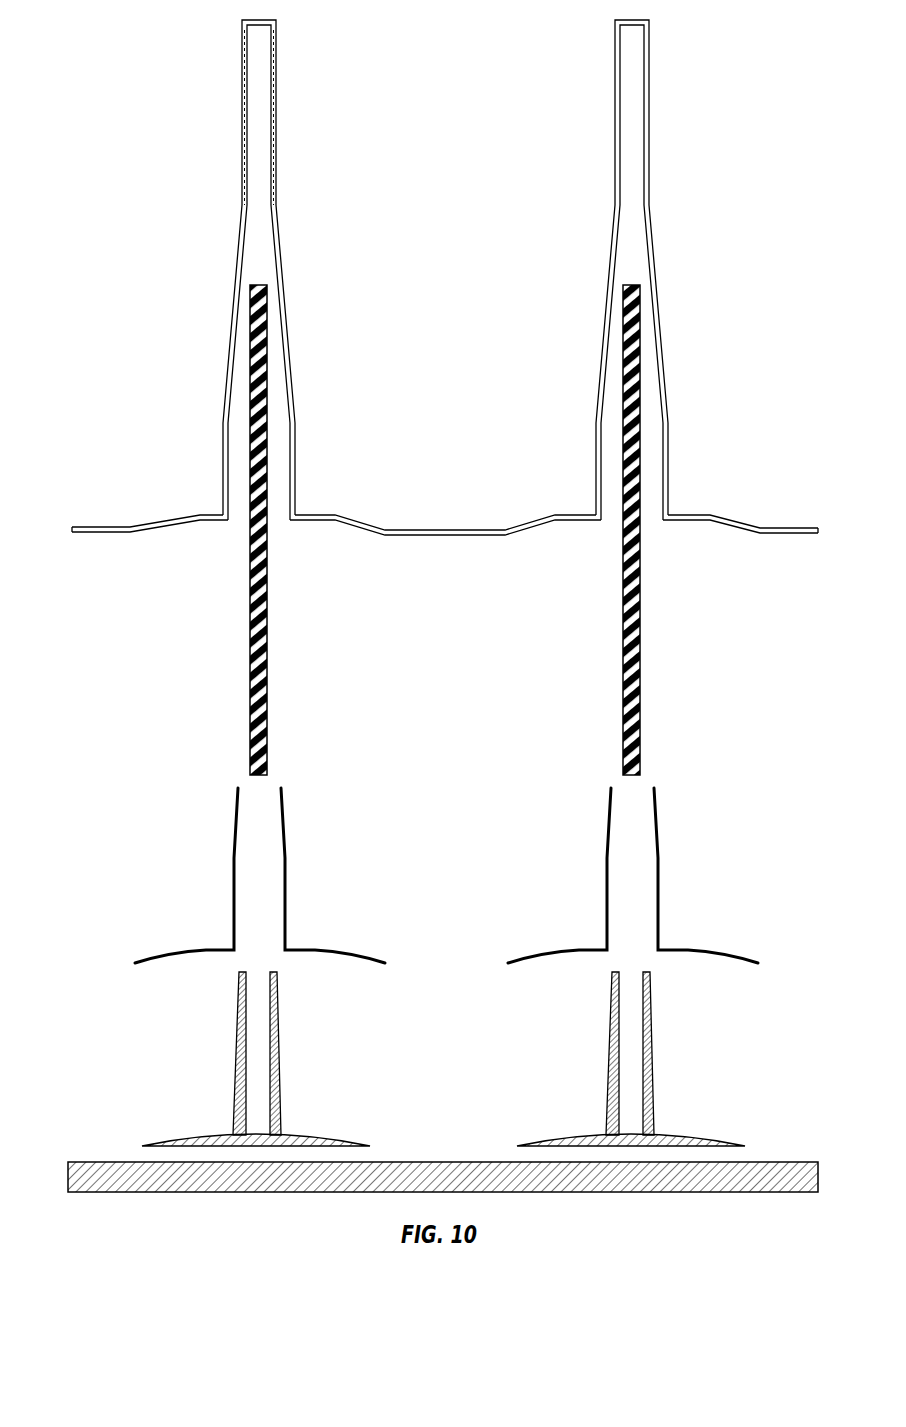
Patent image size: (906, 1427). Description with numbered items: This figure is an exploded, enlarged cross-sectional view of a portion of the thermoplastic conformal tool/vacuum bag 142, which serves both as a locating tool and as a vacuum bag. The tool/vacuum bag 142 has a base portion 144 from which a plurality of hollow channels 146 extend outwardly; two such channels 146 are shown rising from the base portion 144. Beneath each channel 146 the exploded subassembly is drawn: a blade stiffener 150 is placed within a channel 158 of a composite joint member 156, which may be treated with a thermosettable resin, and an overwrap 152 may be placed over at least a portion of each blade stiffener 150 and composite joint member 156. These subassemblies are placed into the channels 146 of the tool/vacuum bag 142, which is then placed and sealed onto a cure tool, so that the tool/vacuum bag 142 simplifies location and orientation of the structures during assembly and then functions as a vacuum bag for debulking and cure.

The thermoplastic conformal tool/vacuum bag 142 is at (222, 255).
The base portion 144 is at (376, 523).
The hollow channels 146 is at (257, 228).
The blade stiffener 150 is at (249, 662).
The overwrap 152 is at (233, 885).
The composite joint member 156 is at (235, 1085).
The channel 158 is at (258, 1049).